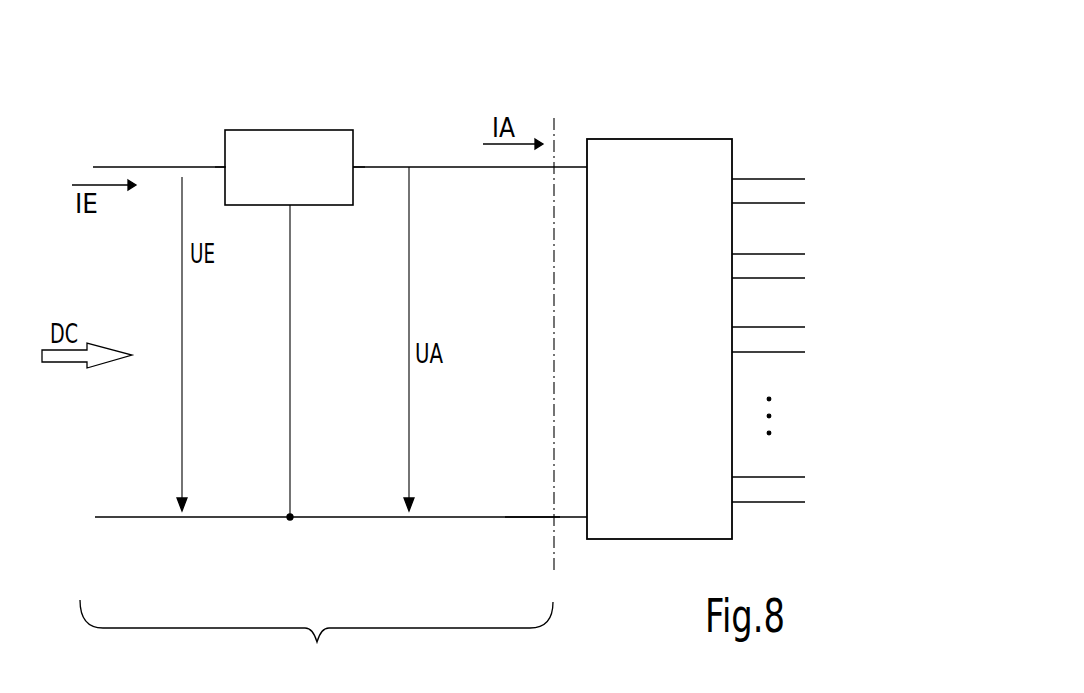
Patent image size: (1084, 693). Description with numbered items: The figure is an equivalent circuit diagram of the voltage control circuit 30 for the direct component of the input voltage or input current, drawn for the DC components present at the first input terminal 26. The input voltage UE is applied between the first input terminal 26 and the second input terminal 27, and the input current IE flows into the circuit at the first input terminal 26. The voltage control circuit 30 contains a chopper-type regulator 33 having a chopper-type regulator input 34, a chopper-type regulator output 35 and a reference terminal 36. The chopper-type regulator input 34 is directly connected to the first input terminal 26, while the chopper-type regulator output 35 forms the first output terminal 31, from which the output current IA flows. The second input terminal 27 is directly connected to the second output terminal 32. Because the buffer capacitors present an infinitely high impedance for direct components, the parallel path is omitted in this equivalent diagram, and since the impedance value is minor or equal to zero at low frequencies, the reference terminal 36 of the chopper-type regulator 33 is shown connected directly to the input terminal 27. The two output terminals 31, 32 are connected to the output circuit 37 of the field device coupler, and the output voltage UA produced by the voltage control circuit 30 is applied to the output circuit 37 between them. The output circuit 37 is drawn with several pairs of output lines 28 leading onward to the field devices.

The first input terminal 26 is at (127, 167).
The second input terminal 27 is at (125, 517).
The output lines 28 is at (723, 169).
The voltage control circuit 30 is at (316, 636).
The first output terminal 31 is at (460, 167).
The second output terminal 32 is at (515, 517).
The chopper-type regulator 33 is at (303, 150).
The chopper-type regulator input 34 is at (225, 167).
The chopper-type regulator output 35 is at (353, 165).
The reference terminal 36 is at (298, 207).
The output circuit 37 is at (645, 152).